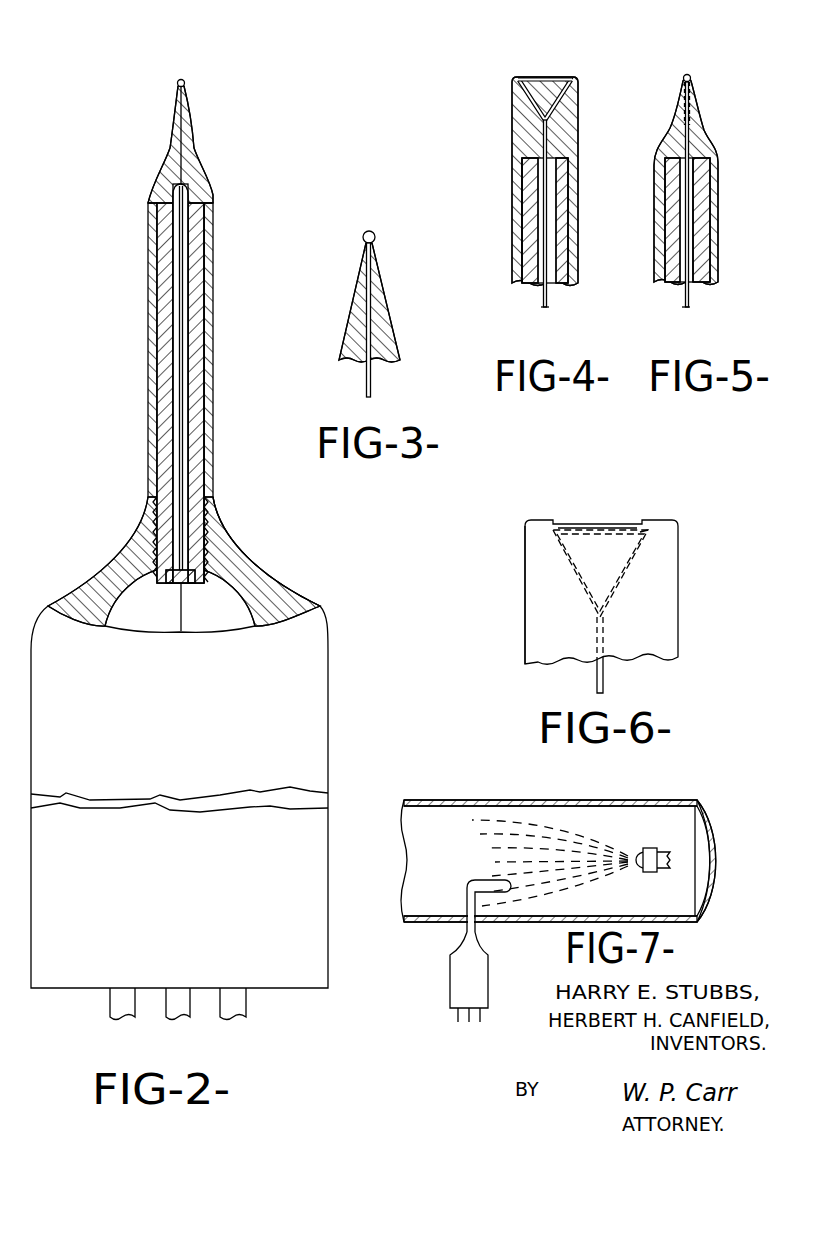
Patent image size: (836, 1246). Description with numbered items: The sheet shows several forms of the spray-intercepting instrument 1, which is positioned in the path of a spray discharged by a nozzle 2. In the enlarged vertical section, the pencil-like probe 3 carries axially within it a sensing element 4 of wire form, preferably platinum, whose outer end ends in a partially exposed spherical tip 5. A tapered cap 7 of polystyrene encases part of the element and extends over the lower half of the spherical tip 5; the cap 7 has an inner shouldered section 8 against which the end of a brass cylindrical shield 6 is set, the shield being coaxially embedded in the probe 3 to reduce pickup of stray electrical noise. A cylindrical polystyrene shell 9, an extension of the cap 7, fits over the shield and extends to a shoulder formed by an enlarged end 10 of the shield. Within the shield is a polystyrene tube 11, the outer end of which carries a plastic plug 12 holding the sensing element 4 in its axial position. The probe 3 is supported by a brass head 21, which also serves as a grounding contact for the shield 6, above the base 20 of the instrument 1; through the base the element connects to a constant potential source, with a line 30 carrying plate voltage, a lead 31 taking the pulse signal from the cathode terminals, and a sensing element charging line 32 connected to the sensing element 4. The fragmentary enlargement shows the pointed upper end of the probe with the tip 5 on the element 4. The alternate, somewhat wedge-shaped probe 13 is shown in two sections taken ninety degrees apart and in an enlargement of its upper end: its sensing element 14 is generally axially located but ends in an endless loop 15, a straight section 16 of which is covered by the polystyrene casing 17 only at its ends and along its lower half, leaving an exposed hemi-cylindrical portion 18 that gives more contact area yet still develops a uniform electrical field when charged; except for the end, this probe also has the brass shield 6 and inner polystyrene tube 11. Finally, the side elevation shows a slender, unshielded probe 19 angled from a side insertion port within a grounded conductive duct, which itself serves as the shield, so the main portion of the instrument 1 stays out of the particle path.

In FIG. 2, the intercepting instrument 1 is at (330, 740).
In FIG. 7, the intercepting instrument 1 is at (458, 982).
In FIG. 7, the nozzle 2 is at (660, 872).
In FIG. 2, the pencil-like probe 3 is at (210, 390).
In FIG. 2, the sensing element 4 is at (182, 202).
In FIG. 3, the sensing element 4 is at (372, 372).
In FIG. 2, the spherical tip 5 is at (184, 81).
In FIG. 3, the spherical tip 5 is at (374, 232).
In FIG. 2, the brass cylindrical shield 6 is at (201, 316).
In FIG. 4, the brass cylindrical shield 6 is at (562, 236).
In FIG. 5, the brass cylindrical shield 6 is at (707, 246).
In FIG. 2, the tapered cap 7 is at (155, 165).
In FIG. 3, the tapered cap 7 is at (346, 307).
In FIG. 2, the inner shouldered section 8 is at (155, 197).
In FIG. 2, the cylindrical polystyrene shell 9 is at (148, 270).
In FIG. 2, the enlarged end 10 is at (153, 508).
In FIG. 2, the polystyrene tube 11 is at (168, 458).
In FIG. 4, the polystyrene tube 11 is at (530, 253).
In FIG. 5, the polystyrene tube 11 is at (697, 222).
In FIG. 2, the plastic plug 12 is at (78, 574).
In FIG. 4, the probe 13 is at (512, 197).
In FIG. 5, the probe 13 is at (660, 235).
In FIG. 6, the probe 13 is at (525, 643).
In FIG. 4, the sensing element 14 is at (548, 212).
In FIG. 5, the sensing element 14 is at (690, 200).
In FIG. 6, the sensing element 14 is at (606, 677).
In FIG. 4, the endless loop 15 is at (557, 112).
In FIG. 5, the endless loop 15 is at (692, 110).
In FIG. 6, the endless loop 15 is at (630, 570).
In FIG. 4, the straight section 16 is at (568, 90).
In FIG. 6, the straight section 16 is at (620, 540).
In FIG. 4, the polystyrene casing 17 is at (512, 122).
In FIG. 5, the polystyrene casing 17 is at (710, 136).
In FIG. 6, the polystyrene casing 17 is at (668, 607).
In FIG. 4, the exposed hemi-cylindrical portion 18 is at (540, 78).
In FIG. 6, the exposed hemi-cylindrical portion 18 is at (582, 520).
In FIG. 7, the unshielded probe 19 is at (467, 893).
In FIG. 2, the base 20 is at (330, 648).
In FIG. 2, the brass head 21 is at (286, 584).
In FIG. 2, the line 30 is at (176, 1013).
In FIG. 2, the lead 31 is at (246, 1012).
In FIG. 2, the sensing element charging line 32 is at (112, 1012).